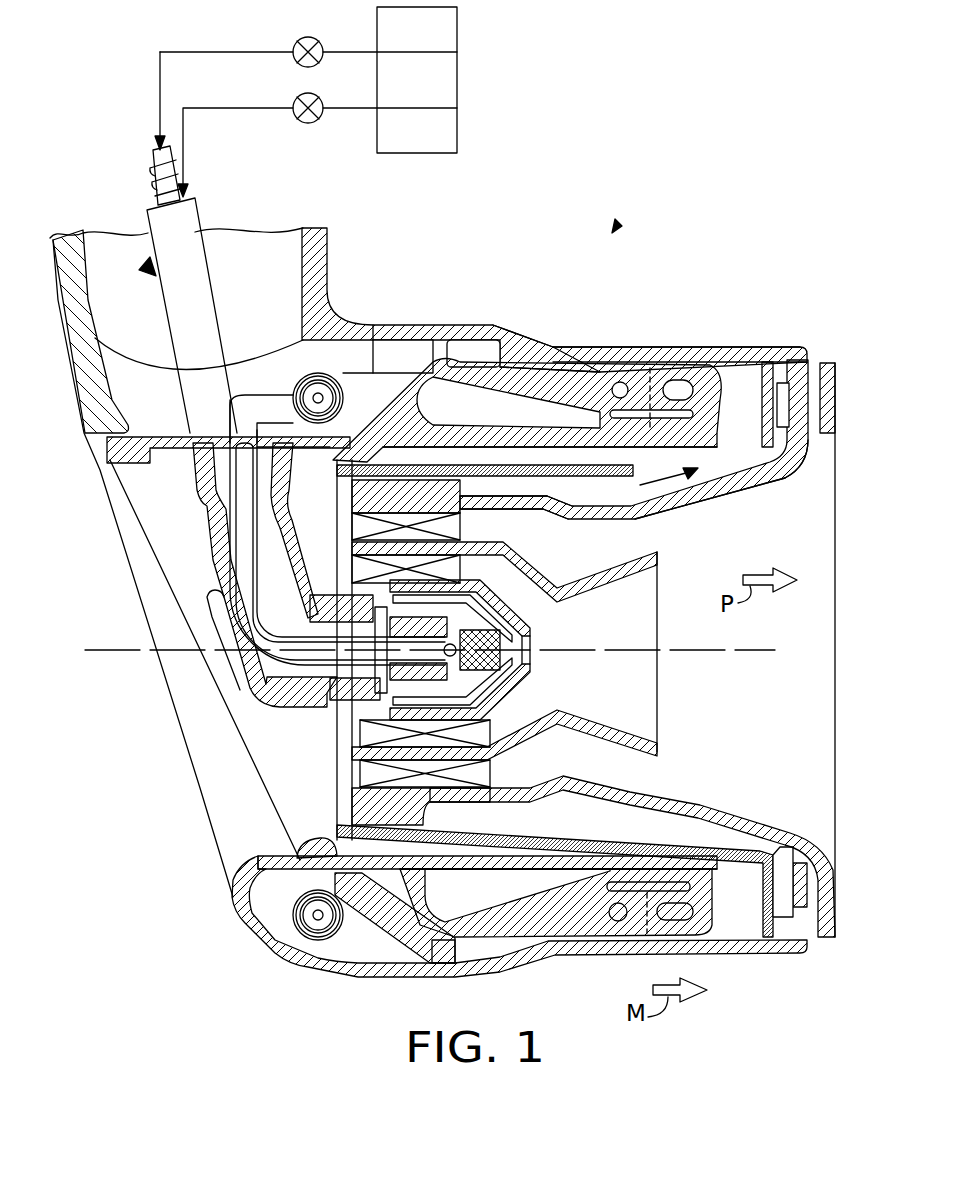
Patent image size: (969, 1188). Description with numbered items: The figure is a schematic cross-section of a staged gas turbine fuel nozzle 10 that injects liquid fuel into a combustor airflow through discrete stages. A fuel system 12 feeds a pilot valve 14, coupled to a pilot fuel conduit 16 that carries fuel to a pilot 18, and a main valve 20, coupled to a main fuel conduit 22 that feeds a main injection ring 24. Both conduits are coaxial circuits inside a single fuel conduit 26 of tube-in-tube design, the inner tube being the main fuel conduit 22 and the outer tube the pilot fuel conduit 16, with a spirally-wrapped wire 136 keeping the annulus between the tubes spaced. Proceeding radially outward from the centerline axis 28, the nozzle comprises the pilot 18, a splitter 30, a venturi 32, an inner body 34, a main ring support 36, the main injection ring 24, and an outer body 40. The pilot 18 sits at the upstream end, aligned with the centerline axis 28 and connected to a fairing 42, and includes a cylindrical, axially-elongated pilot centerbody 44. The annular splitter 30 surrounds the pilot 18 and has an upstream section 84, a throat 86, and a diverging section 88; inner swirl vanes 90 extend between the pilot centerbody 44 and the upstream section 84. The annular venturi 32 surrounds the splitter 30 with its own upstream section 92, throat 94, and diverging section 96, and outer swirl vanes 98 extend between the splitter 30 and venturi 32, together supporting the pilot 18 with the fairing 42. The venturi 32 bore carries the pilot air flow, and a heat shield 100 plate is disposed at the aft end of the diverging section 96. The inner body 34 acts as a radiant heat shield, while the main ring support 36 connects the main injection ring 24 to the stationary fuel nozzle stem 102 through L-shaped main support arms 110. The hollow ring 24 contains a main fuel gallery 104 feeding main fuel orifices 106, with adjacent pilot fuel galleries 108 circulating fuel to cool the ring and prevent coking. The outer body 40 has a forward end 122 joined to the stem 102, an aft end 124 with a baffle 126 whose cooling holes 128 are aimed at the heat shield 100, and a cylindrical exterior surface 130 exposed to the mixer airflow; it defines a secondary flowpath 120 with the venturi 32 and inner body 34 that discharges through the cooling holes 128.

The fuel nozzle 10 is at (616, 226).
The fuel system 12 is at (405, 91).
The pilot valve 14 is at (296, 100).
The pilot fuel conduit 16 is at (162, 205).
The pilot 18 is at (369, 721).
The main valve 20 is at (296, 43).
The main fuel conduit 22 is at (150, 148).
The main injection ring 24 is at (697, 376).
The fuel conduit 26 is at (147, 270).
The centerline axis 28 is at (128, 660).
The splitter 30 is at (640, 748).
The venturi 32 is at (747, 492).
The inner body 34 is at (552, 477).
The main ring support 36 is at (562, 446).
The outer body 40 is at (735, 350).
The fairing 42 is at (196, 497).
The pilot centerbody 44 is at (512, 607).
The upstream section 84 is at (372, 560).
The throat 86 is at (557, 594).
The diverging section 88 is at (623, 583).
The inner swirl vanes 90 is at (470, 733).
The upstream section 92 is at (512, 520).
The throat 94 is at (567, 520).
The diverging section 96 is at (665, 507).
The outer swirl vanes 98 is at (372, 527).
The heat shield 100 is at (828, 368).
The fuel nozzle stem 102 is at (313, 278).
The main fuel gallery 104 is at (694, 415).
The main fuel orifices 106 is at (652, 366).
The pilot fuel galleries 108 is at (619, 383).
The main support arms 110 is at (568, 341).
The secondary flowpath 120 is at (646, 484).
The forward end 122 is at (380, 333).
The aft end 124 is at (808, 343).
The baffle 126 is at (798, 370).
The cooling holes 128 is at (812, 470).
The exterior surface 130 is at (571, 346).
The spirally-wrapped wire 136 is at (153, 155).